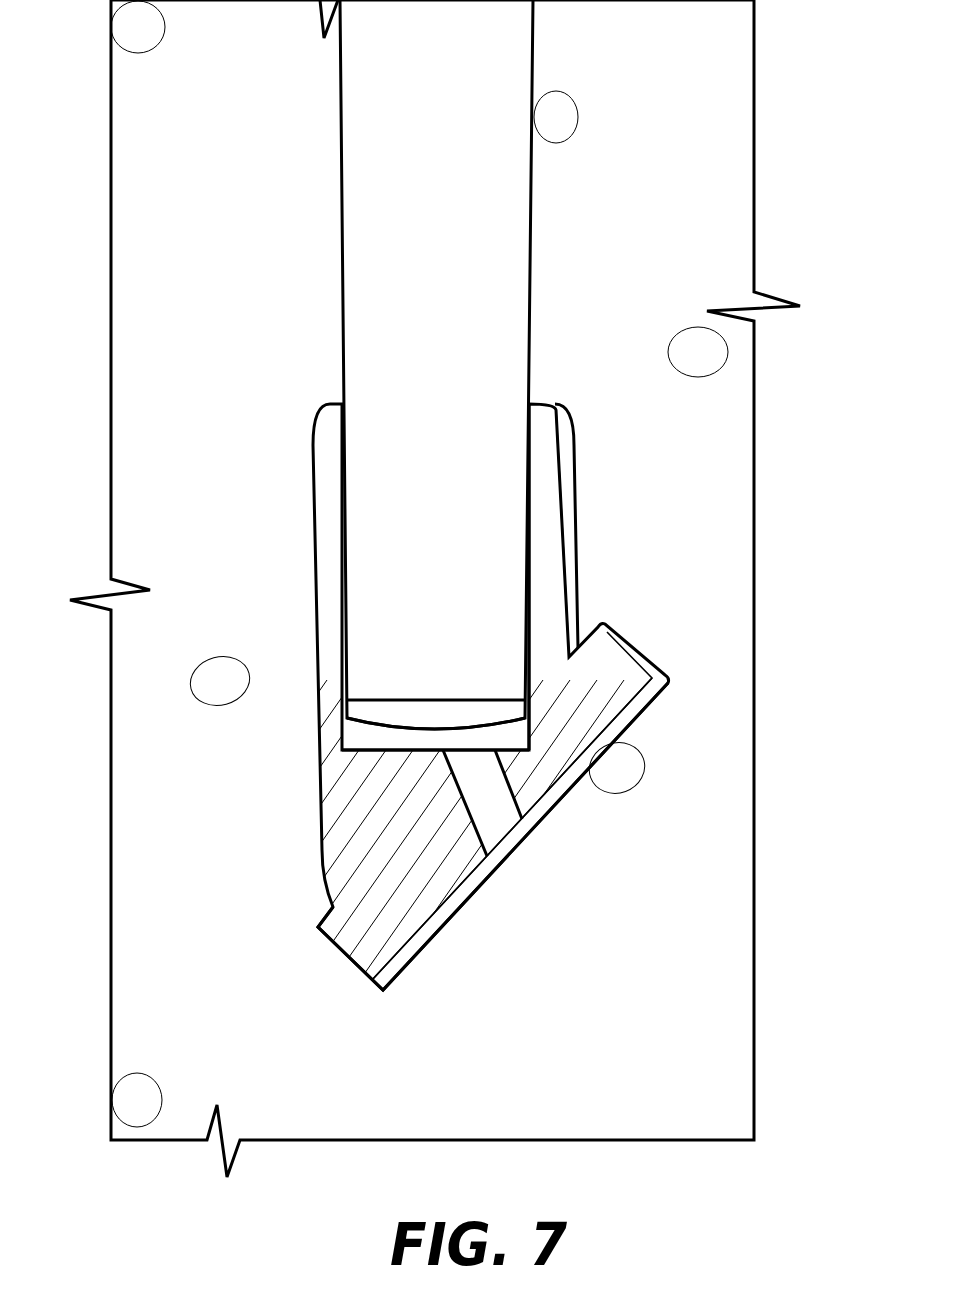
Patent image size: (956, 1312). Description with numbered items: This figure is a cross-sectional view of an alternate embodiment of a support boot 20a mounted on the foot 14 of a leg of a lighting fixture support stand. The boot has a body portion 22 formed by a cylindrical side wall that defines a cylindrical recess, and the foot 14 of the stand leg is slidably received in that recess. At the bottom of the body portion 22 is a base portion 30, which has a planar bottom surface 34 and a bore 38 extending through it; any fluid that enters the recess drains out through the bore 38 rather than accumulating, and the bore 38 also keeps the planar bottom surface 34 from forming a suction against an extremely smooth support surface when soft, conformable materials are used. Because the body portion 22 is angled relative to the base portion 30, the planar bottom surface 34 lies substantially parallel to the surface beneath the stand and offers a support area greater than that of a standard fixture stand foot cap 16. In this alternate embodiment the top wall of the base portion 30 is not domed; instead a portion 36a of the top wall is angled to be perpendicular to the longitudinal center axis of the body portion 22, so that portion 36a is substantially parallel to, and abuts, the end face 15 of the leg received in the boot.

The foot 14 is at (423, 772).
The end face 15 is at (419, 727).
The fixture stand foot cap 16 is at (493, 724).
The support boot 20a is at (562, 480).
The body portion 22 is at (550, 567).
The base portion 30 is at (402, 885).
The planar bottom surface 34 is at (472, 883).
The portion of the top wall 36a is at (378, 750).
The bore 38 is at (500, 787).